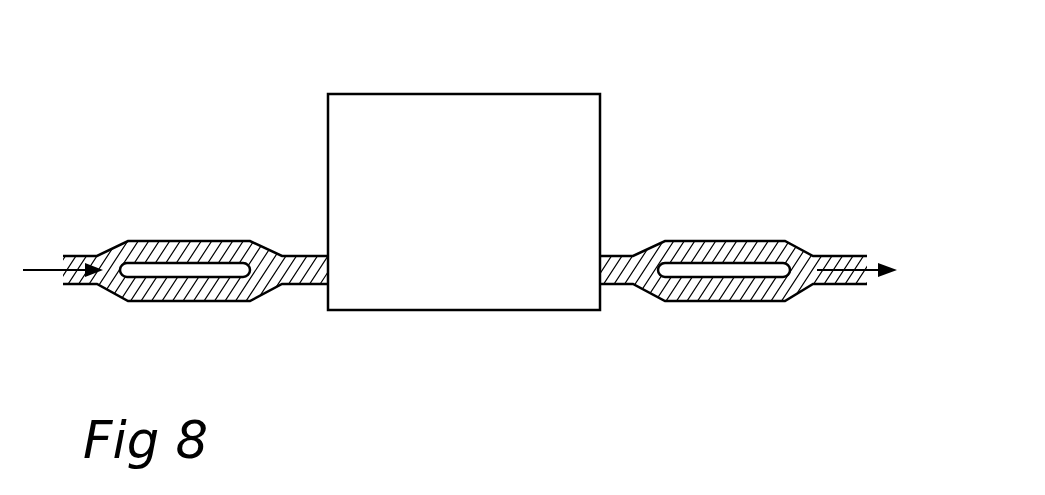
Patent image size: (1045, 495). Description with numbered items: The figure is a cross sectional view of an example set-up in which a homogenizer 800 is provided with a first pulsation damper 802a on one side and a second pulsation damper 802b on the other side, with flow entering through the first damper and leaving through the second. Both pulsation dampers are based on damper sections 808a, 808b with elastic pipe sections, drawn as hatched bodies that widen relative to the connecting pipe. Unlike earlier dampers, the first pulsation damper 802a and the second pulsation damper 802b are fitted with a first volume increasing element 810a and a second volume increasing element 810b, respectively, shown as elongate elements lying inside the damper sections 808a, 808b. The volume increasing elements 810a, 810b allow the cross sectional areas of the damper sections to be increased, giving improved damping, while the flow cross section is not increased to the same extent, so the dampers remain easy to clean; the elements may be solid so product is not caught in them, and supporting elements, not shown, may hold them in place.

The homogenizer 800 is at (432, 115).
The first pulsation damper 802a is at (208, 189).
The second pulsation damper 802b is at (748, 189).
The damper section 808a is at (180, 240).
The damper section 808b is at (718, 240).
The first volume increasing element 810a is at (212, 268).
The second volume increasing element 810b is at (762, 268).